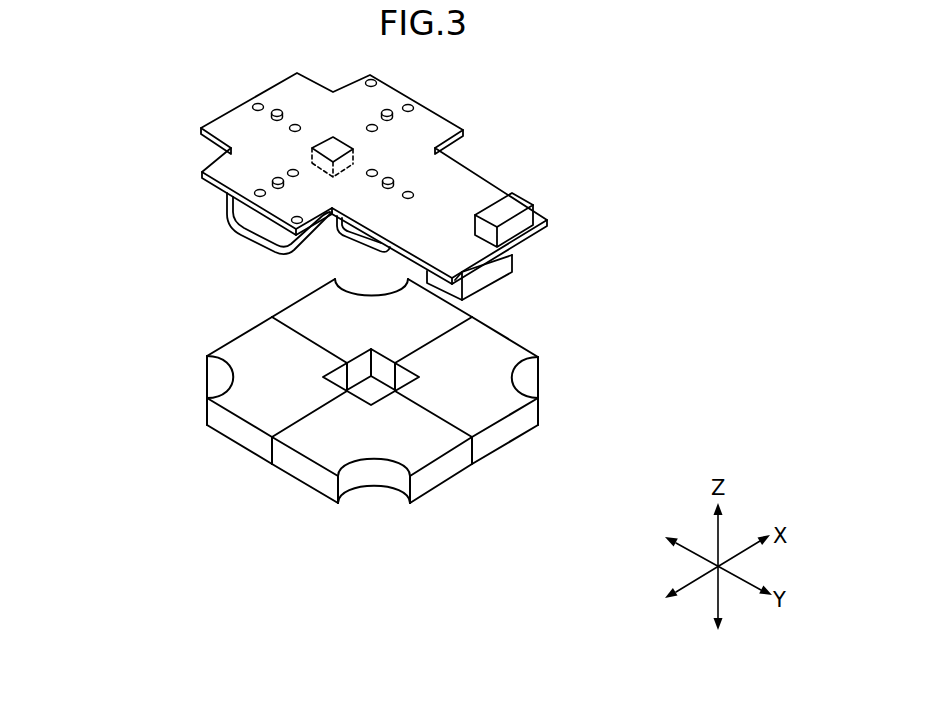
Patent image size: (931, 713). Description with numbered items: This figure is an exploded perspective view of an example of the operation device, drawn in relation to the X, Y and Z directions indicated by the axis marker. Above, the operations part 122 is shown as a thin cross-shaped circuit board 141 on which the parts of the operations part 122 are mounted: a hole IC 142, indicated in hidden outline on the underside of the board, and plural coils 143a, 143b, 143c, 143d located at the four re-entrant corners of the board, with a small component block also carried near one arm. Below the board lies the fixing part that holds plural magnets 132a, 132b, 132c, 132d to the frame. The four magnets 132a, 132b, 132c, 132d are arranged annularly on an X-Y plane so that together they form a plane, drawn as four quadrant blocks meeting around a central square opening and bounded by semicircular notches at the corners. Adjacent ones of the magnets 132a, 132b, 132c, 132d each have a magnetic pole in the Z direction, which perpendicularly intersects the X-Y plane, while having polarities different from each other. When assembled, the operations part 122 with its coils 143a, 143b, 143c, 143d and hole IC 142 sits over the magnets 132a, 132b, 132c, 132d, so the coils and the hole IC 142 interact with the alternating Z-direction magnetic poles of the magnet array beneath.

The circuit board 141 is at (465, 200).
The hole IC 142 is at (353, 157).
The operations part 122 is at (540, 250).
The coil 143a is at (214, 223).
The coil 143b is at (334, 246).
The coil 143c is at (458, 150).
The coil 143d is at (216, 152).
The magnet 132a is at (211, 450).
The magnet 132b is at (298, 495).
The magnet 132c is at (526, 454).
The magnet 132d is at (298, 307).